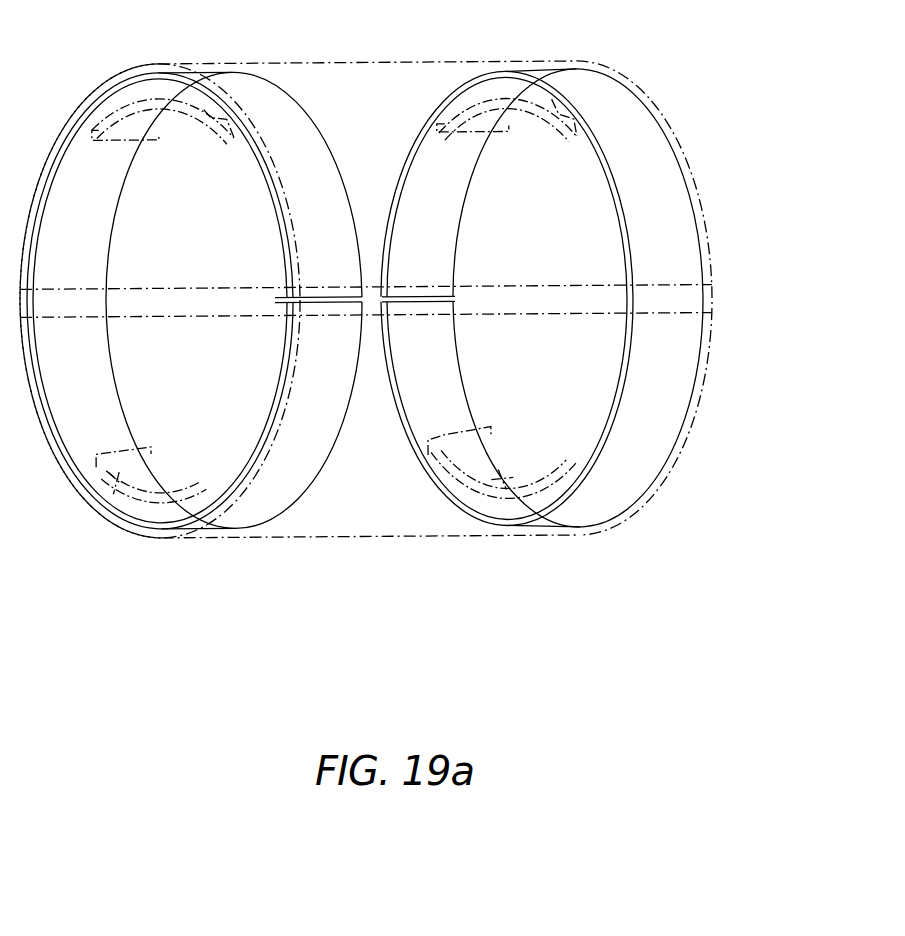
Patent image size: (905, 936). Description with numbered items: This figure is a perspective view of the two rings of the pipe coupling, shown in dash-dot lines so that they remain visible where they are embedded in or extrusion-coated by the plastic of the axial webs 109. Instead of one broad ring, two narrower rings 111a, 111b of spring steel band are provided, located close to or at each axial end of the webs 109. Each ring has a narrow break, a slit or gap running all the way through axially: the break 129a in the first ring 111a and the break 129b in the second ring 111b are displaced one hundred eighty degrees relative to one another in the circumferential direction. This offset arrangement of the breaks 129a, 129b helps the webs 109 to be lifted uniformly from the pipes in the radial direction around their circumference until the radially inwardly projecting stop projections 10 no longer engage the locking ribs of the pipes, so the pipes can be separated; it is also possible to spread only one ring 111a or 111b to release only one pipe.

The stop projection 10 is at (90, 500).
The web 109 is at (362, 100).
The first ring 111a is at (132, 113).
The second ring 111b is at (608, 110).
The break of first ring 129a is at (290, 301).
The break of second ring 129b is at (432, 300).